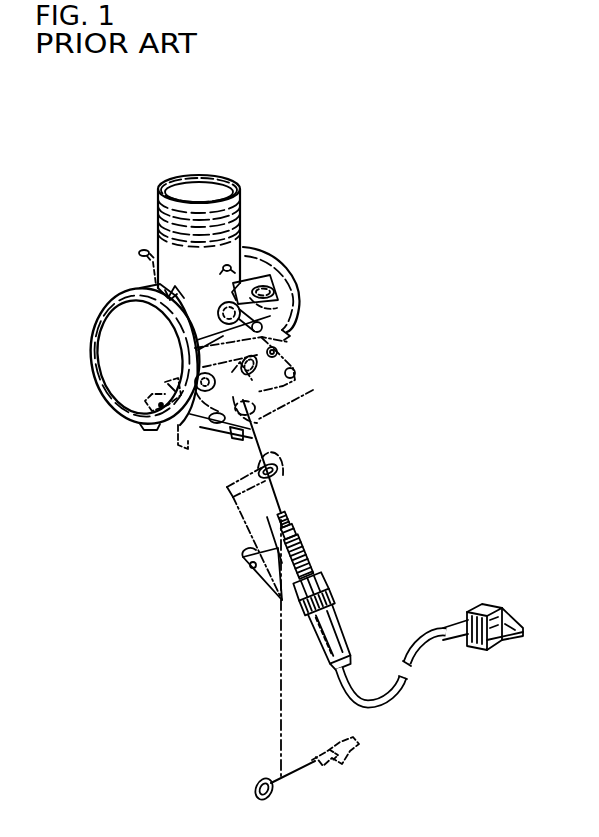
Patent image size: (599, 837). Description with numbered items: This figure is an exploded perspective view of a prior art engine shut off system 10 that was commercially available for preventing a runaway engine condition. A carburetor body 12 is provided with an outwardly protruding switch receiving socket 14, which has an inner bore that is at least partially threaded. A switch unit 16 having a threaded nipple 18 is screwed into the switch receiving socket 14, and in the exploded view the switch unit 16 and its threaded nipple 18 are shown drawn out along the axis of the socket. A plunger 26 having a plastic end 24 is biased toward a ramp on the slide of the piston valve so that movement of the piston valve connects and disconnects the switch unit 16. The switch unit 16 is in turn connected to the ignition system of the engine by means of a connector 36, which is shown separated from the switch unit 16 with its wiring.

The system 10 is at (296, 193).
The carburetor body 12 is at (158, 228).
The switch receiving socket 14 is at (252, 403).
The switch unit 16 is at (330, 594).
The threaded nipple 18 is at (304, 563).
The plastic end 24 is at (284, 514).
The plunger 26 is at (289, 528).
The connector 36 is at (473, 610).